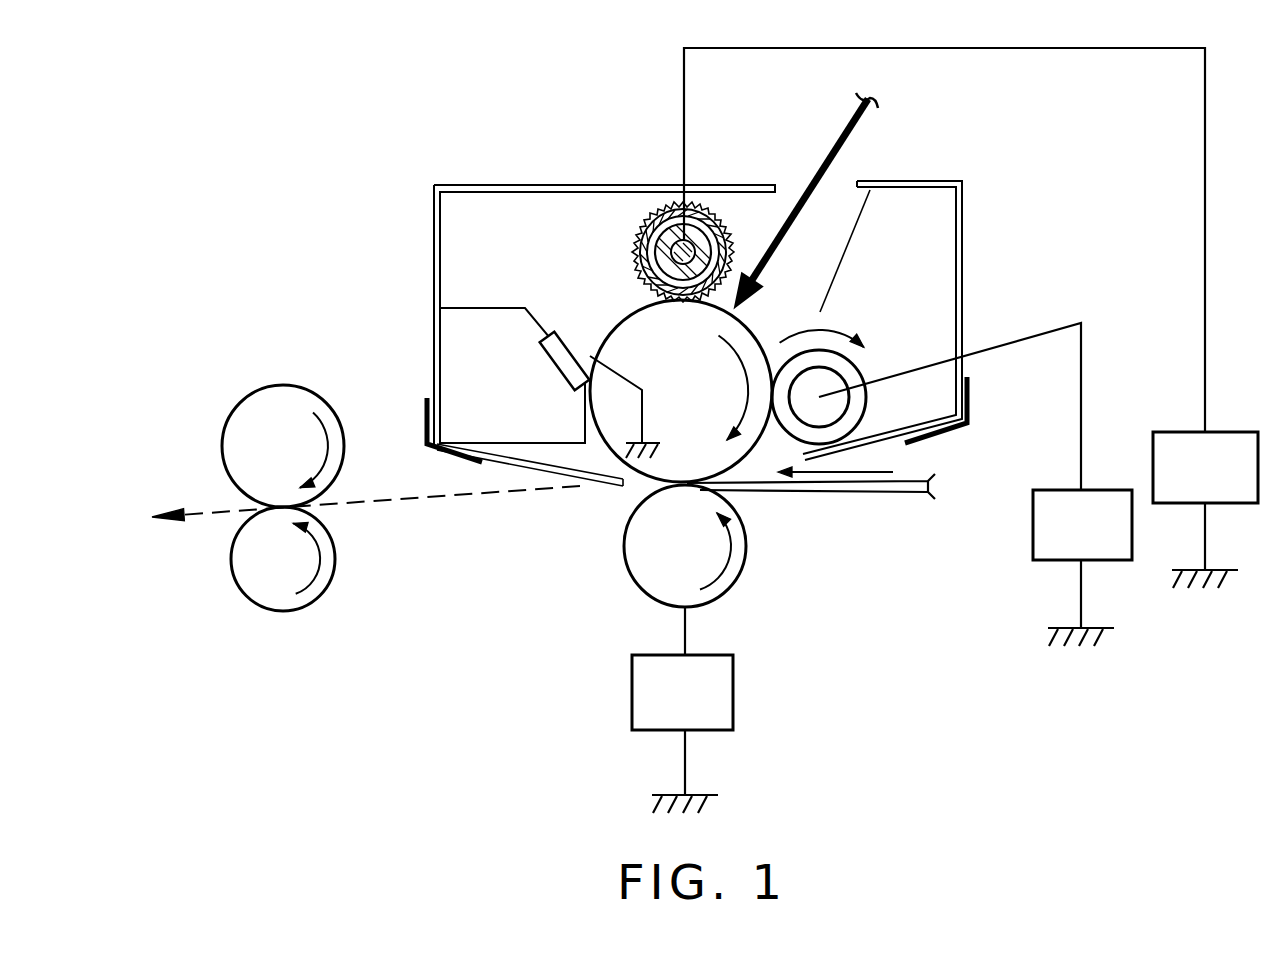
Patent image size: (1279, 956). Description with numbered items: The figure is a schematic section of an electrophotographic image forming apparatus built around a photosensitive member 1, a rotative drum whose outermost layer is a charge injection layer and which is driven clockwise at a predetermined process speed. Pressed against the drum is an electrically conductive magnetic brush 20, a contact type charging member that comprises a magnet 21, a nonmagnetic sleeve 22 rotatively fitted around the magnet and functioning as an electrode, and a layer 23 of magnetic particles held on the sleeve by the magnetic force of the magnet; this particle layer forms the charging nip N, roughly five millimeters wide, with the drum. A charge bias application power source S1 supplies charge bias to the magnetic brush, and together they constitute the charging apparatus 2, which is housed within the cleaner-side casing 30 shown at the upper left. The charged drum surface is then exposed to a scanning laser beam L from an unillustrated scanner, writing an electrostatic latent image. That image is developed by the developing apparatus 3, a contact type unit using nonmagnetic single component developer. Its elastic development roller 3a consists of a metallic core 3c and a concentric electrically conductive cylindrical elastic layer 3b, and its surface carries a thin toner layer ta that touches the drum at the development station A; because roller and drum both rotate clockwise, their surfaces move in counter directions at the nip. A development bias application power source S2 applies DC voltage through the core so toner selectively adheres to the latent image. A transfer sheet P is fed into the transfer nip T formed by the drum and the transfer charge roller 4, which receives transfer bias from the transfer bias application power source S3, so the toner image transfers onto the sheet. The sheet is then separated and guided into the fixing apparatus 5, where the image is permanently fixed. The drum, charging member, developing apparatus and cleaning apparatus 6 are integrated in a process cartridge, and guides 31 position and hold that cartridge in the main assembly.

The photosensitive member 1 is at (620, 346).
The charging apparatus 2 is at (630, 209).
The developing apparatus 3 is at (878, 287).
The elastic development roller 3a is at (861, 363).
The electrically conductive cylindrical elastic layer 3b is at (820, 360).
The metallic core 3c is at (828, 387).
The transfer charge roller 4 is at (740, 582).
The fixing apparatus 5 is at (264, 386).
The cleaning apparatus 6 is at (460, 365).
The magnetic brush 20 is at (626, 250).
The magnet 21 is at (661, 258).
The nonmagnetic sleeve 22 is at (641, 229).
The layer of magnetic particles 23 is at (645, 272).
The cleaning device 30 is at (476, 183).
The guides 31 is at (430, 455).
The scanning laser beam L is at (832, 148).
The charging nip N is at (677, 303).
The development station A is at (770, 397).
The transfer nip T is at (684, 483).
The toner layer ta is at (783, 433).
The transfer sheet P is at (855, 492).
The charge bias application power source S1 is at (971, 318).
The development bias application power source S2 is at (975, 484).
The transfer bias application power source S3 is at (682, 710).